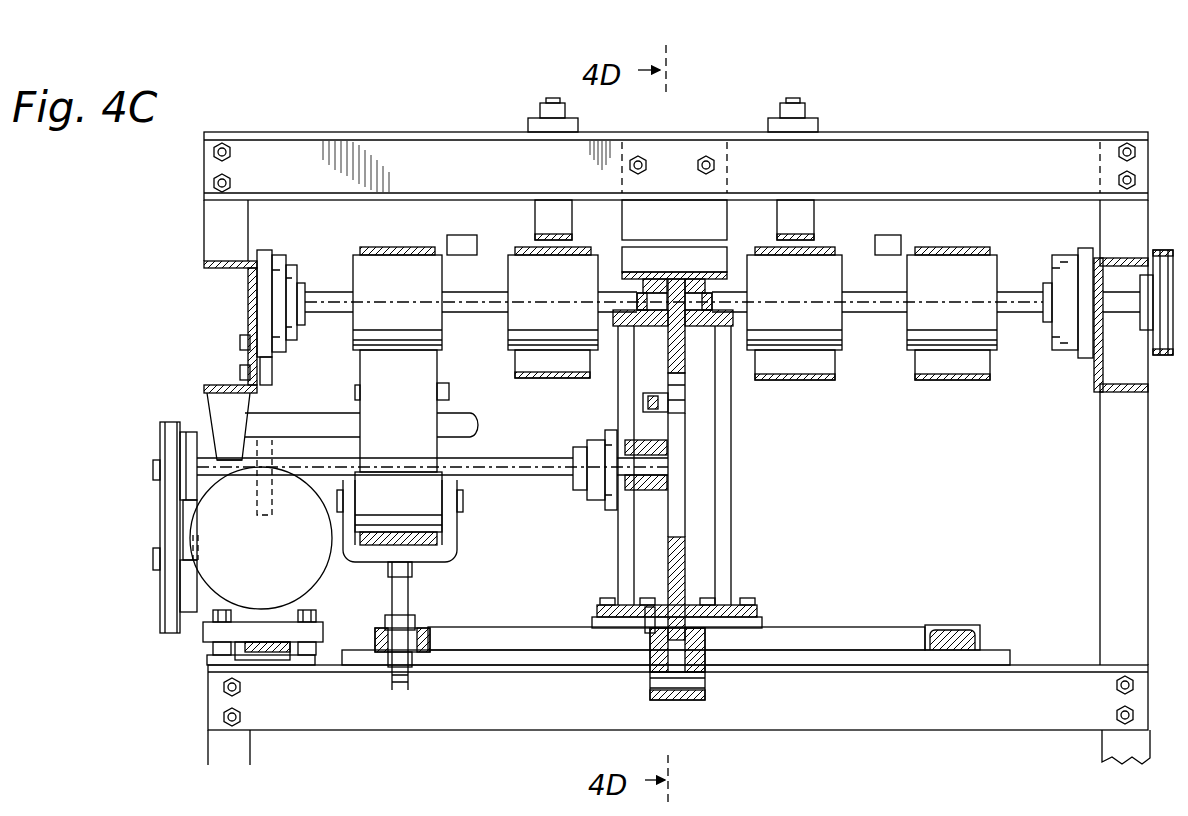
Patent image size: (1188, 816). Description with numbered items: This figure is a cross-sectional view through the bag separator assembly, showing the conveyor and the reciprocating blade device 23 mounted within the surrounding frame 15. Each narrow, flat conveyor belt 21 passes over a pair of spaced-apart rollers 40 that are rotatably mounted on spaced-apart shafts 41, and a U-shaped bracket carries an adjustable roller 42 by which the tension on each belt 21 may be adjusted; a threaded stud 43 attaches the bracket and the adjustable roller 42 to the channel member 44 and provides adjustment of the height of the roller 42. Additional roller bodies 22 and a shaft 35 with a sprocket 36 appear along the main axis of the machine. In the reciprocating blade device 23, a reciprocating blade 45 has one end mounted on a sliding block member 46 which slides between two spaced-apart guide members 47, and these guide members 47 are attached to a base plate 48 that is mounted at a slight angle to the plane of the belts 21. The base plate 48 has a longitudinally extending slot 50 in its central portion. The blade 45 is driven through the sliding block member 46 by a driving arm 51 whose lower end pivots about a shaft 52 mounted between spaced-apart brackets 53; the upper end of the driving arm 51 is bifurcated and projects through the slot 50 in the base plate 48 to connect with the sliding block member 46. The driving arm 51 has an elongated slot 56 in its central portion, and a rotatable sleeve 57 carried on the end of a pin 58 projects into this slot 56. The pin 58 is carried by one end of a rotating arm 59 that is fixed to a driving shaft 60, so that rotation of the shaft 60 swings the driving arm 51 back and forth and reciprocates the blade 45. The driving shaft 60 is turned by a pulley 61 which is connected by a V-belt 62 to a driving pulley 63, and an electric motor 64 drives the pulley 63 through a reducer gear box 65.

The frame 15 is at (935, 127).
The conveyor belt 21 is at (405, 412).
The roller 22 is at (406, 298).
The reciprocating blade device 23 is at (150, 456).
The shaft 35 is at (1010, 292).
The sprocket 36 is at (1160, 250).
The roller 40 is at (450, 393).
The shaft 41 is at (297, 416).
The adjustable roller 42 is at (406, 506).
The threaded stud 43 is at (410, 590).
The channel member 44 is at (500, 628).
The reciprocating blade 45 is at (668, 258).
The sliding block member 46 is at (645, 285).
The guide member 47 is at (637, 300).
The base plate 48 is at (733, 318).
The longitudinally extending slot 50 is at (684, 322).
The driving arm 51 is at (686, 557).
The shaft 52 is at (650, 680).
The bracket 53 is at (695, 628).
The elongated slot 56 is at (676, 457).
The rotatable sleeve 57 is at (685, 402).
The pin 58 is at (655, 394).
The rotating arm 59 is at (650, 452).
The driving shaft 60 is at (544, 466).
The pulley 61 is at (190, 430).
The V-belt 62 is at (170, 495).
The driving pulley 63 is at (170, 610).
The electric motor 64 is at (272, 556).
The reducer gear box 65 is at (290, 622).